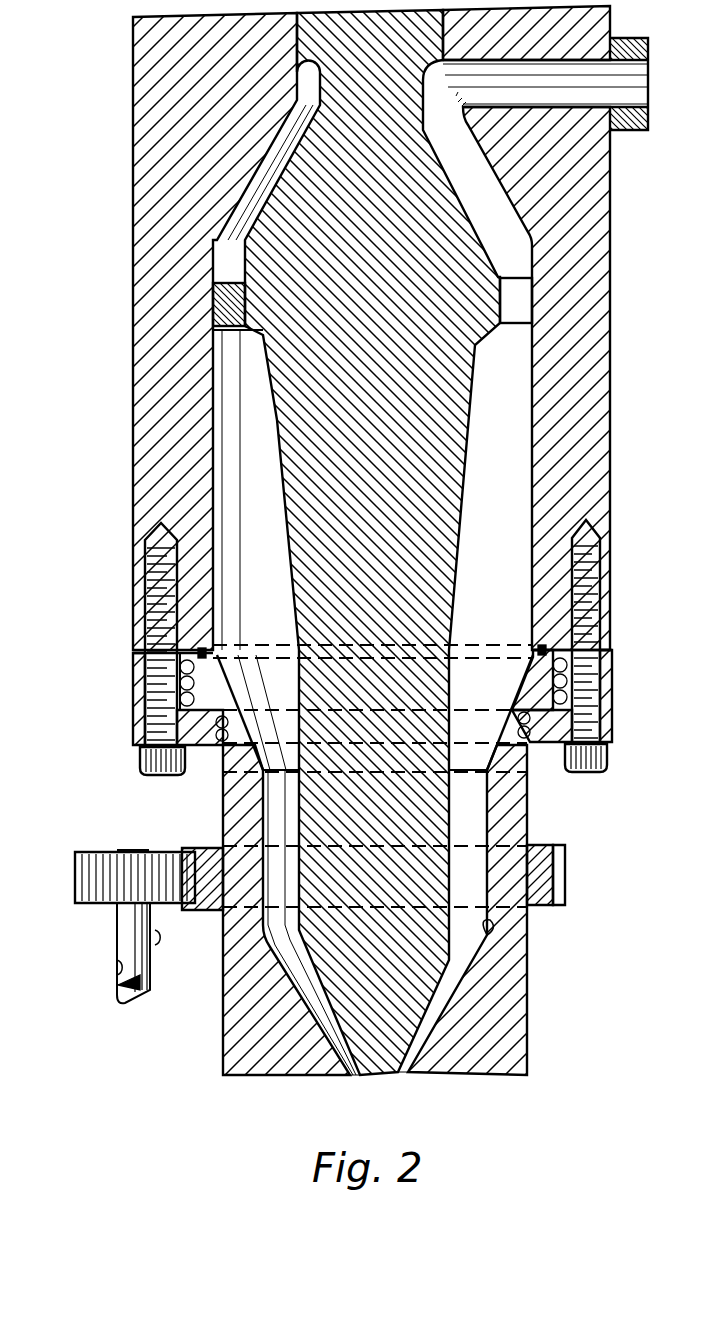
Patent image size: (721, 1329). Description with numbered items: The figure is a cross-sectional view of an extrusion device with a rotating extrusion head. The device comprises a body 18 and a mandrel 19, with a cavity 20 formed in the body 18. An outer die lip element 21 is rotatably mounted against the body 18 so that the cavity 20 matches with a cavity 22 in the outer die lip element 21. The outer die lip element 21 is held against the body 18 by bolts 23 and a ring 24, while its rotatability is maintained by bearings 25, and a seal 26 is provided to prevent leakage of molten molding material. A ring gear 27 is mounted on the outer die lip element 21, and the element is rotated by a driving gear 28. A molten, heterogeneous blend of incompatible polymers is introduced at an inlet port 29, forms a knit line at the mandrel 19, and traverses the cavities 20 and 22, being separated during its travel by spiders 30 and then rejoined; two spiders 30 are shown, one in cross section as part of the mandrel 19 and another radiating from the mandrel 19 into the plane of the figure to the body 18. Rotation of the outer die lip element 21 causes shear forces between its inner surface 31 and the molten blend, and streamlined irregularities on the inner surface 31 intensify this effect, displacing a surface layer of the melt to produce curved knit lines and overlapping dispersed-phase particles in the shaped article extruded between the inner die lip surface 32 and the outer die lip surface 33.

The body 18 is at (140, 362).
The mandrel 19 is at (310, 200).
The cavity 20 is at (250, 462).
The outer die lip element 21 is at (235, 816).
The cavity 22 is at (470, 813).
The bolts 23 is at (140, 758).
The ring 24 is at (135, 688).
The bearings 25 is at (180, 660).
The seal 26 is at (175, 615).
The ring gear 27 is at (568, 866).
The driving gear 28 is at (75, 872).
The inlet port 29 is at (637, 104).
The spiders 30 is at (240, 268).
The inner surface 31 is at (490, 938).
The inner die lip surface 32 is at (352, 1078).
The outer die lip surface 33 is at (403, 1076).